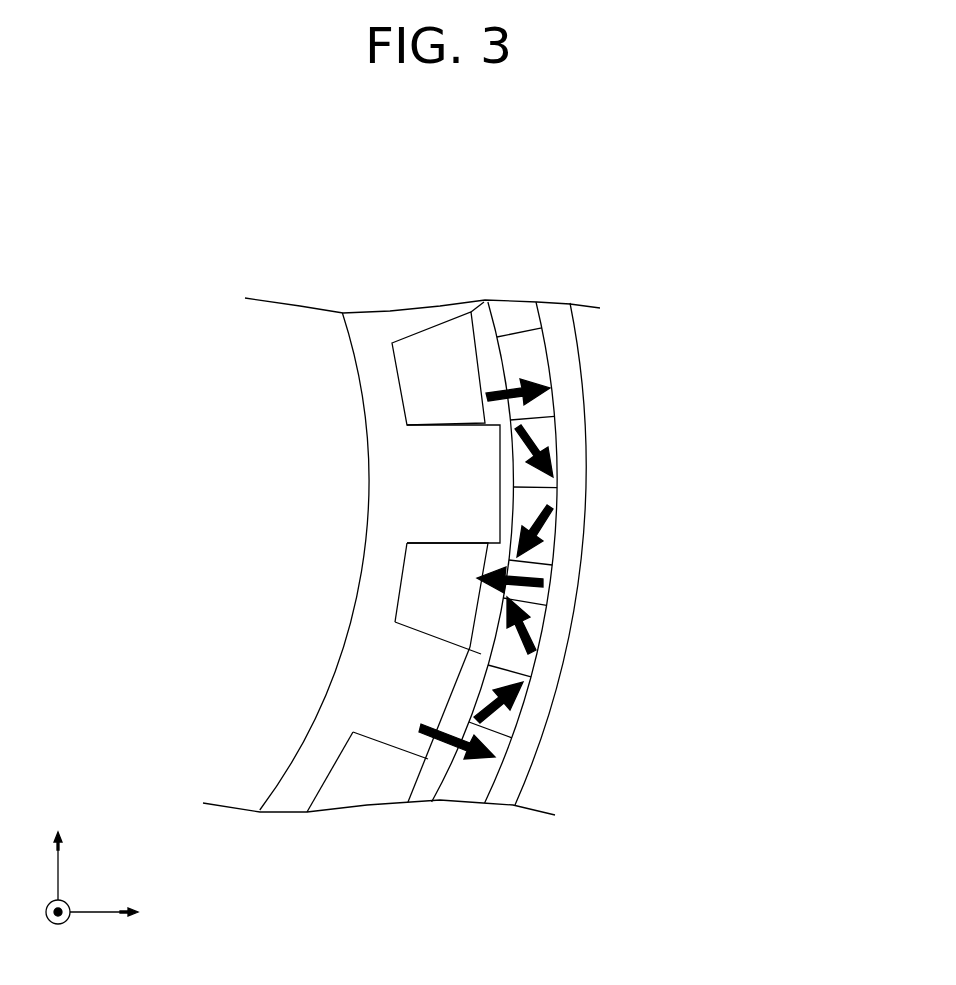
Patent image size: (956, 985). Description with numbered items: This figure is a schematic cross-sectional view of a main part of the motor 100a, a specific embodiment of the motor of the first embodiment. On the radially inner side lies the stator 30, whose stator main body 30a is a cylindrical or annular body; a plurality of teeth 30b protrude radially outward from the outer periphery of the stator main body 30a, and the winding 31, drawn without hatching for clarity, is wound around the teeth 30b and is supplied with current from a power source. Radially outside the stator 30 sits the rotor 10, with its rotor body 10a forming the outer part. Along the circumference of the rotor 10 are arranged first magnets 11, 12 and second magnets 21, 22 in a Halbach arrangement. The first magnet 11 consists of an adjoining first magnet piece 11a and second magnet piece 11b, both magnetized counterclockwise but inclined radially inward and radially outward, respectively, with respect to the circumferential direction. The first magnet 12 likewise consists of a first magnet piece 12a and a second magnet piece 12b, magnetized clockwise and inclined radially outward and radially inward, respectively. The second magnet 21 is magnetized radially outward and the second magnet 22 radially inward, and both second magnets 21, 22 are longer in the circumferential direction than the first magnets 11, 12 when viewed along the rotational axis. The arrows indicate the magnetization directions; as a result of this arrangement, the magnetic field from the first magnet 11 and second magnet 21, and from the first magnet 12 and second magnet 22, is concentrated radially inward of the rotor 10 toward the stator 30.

The motor 100a is at (833, 137).
The rotor 10 is at (703, 341).
The rotor body 10a is at (508, 788).
The first magnet 11 is at (642, 623).
The first magnet piece 11a is at (533, 640).
The second magnet piece 11b is at (527, 325).
The first magnet 12 is at (655, 432).
The first magnet piece 12a is at (553, 443).
The second magnet piece 12b is at (557, 490).
The second magnet 21 is at (547, 410).
The second magnet 22 is at (543, 563).
The stator 30 is at (282, 777).
The stator main body 30a is at (377, 535).
The tooth 30b is at (463, 477).
The winding 31 is at (420, 387).